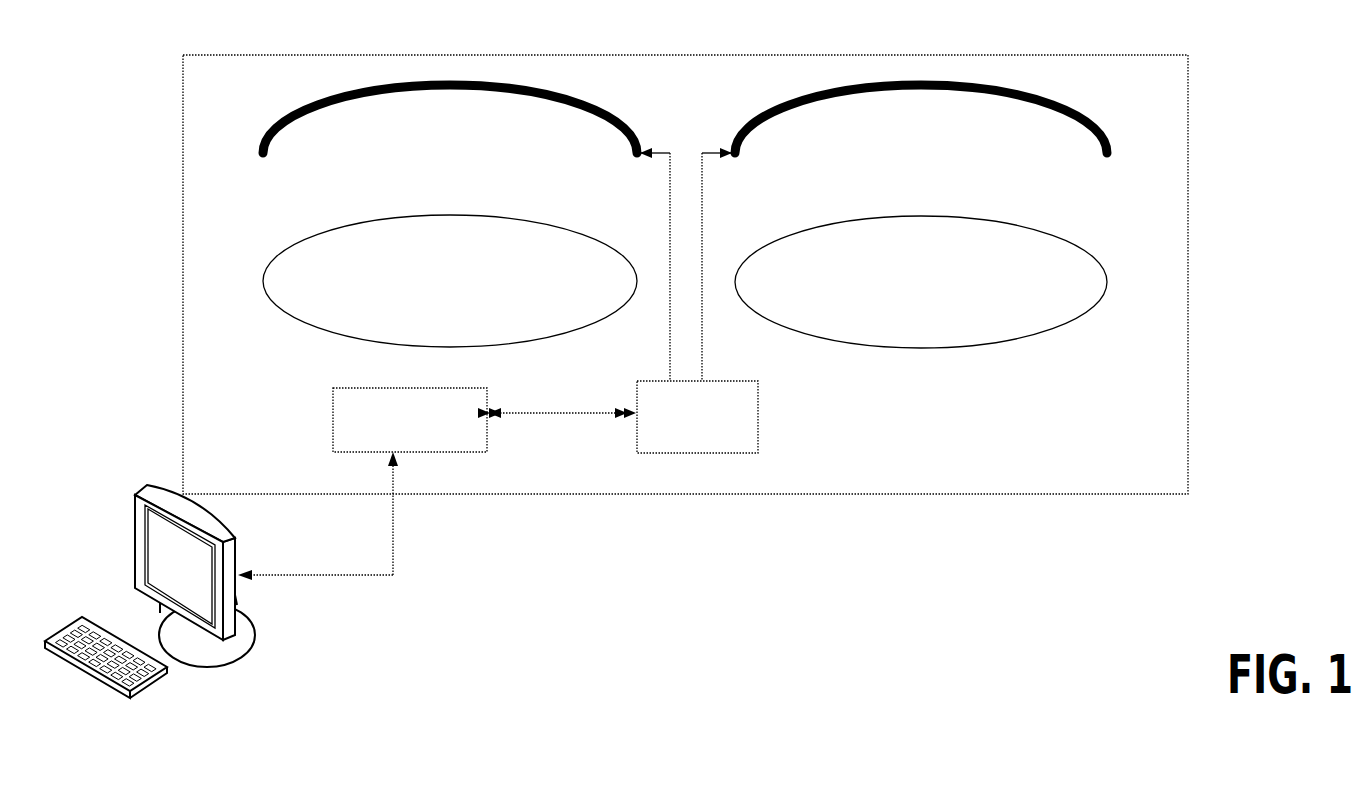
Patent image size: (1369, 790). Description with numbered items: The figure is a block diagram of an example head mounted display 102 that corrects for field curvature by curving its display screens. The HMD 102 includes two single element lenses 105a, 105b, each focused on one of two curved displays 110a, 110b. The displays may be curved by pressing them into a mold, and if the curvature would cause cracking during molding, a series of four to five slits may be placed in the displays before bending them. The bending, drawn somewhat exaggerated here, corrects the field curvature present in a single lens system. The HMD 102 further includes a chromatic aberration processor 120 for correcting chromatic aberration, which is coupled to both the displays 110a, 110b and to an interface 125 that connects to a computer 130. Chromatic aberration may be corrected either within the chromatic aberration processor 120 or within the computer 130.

The head mounted display 102 is at (1077, 55).
The single element lens 105a is at (518, 350).
The single element lens 105b is at (1110, 277).
The curved display 110a is at (636, 134).
The curved display 110b is at (1103, 129).
The chromatic aberration processor 120 is at (760, 427).
The interface 125 is at (488, 446).
The computer 130 is at (257, 633).